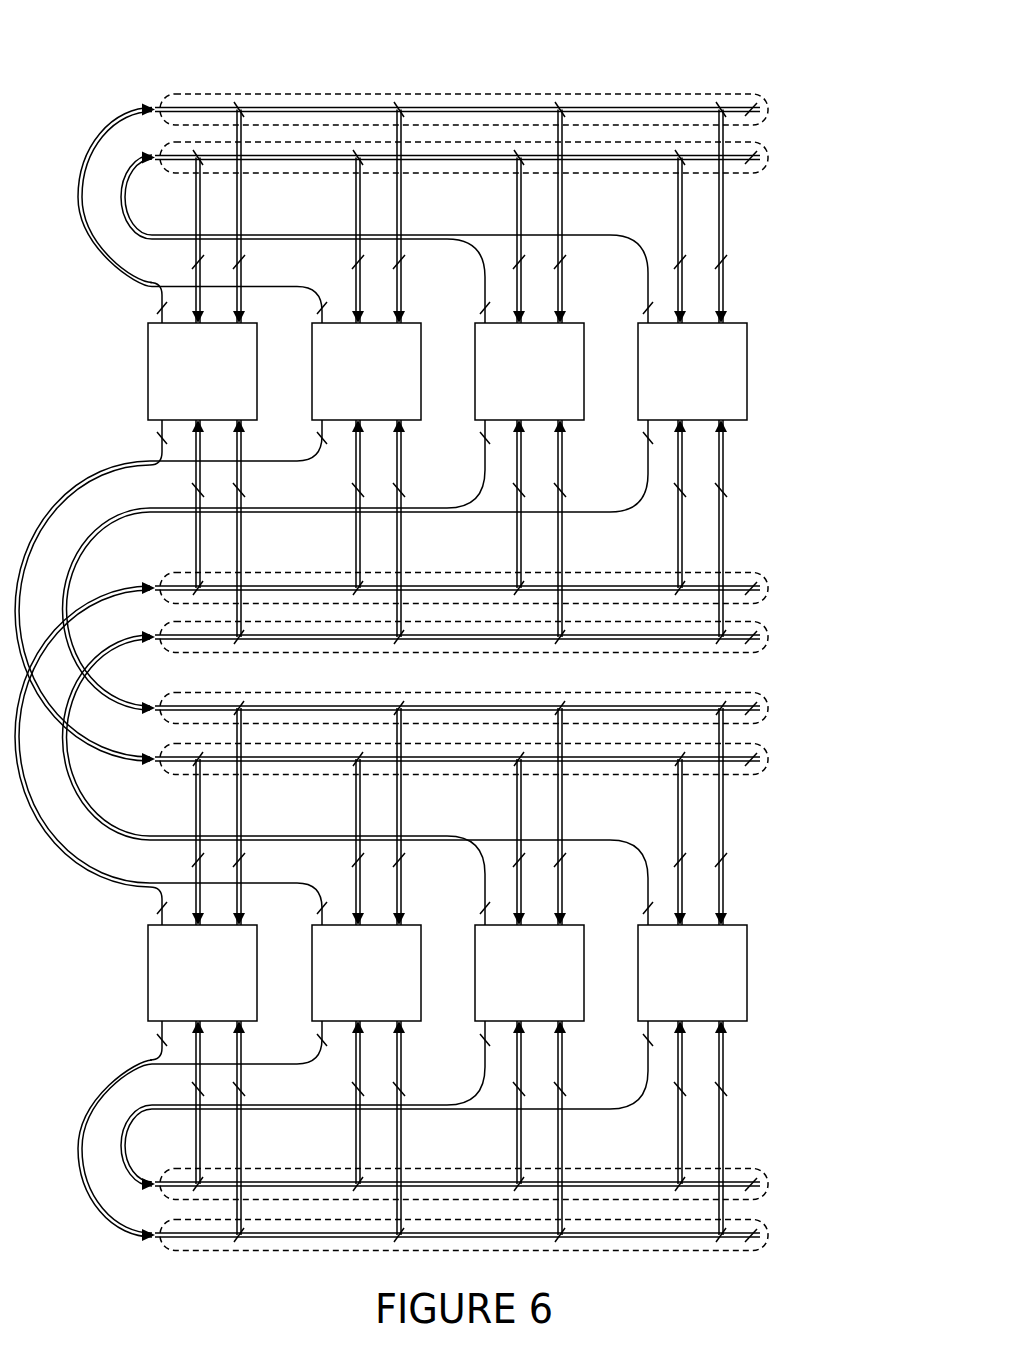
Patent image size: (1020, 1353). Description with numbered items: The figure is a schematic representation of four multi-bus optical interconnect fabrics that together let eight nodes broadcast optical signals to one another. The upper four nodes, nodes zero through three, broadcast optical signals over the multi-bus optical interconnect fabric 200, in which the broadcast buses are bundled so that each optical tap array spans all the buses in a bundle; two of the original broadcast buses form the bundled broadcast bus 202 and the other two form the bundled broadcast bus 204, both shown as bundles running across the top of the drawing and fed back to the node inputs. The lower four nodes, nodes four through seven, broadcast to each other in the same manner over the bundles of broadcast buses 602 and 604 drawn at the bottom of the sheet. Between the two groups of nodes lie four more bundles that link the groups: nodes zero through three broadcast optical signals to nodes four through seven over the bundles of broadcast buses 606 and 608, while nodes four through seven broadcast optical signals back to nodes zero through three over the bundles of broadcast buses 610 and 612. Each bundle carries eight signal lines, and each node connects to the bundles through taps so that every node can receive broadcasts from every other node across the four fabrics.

The multi-bus optical interconnect fabric 200 is at (634, 70).
The bundled broadcast bus 202 is at (771, 104).
The bundled broadcast bus 204 is at (771, 153).
The bundle of broadcast buses 602 is at (771, 1229).
The bundle of broadcast buses 604 is at (771, 1178).
The bundle of broadcast buses 606 is at (771, 753).
The bundle of broadcast buses 608 is at (771, 702).
The bundle of broadcast buses 610 is at (771, 630).
The bundle of broadcast buses 612 is at (771, 582).